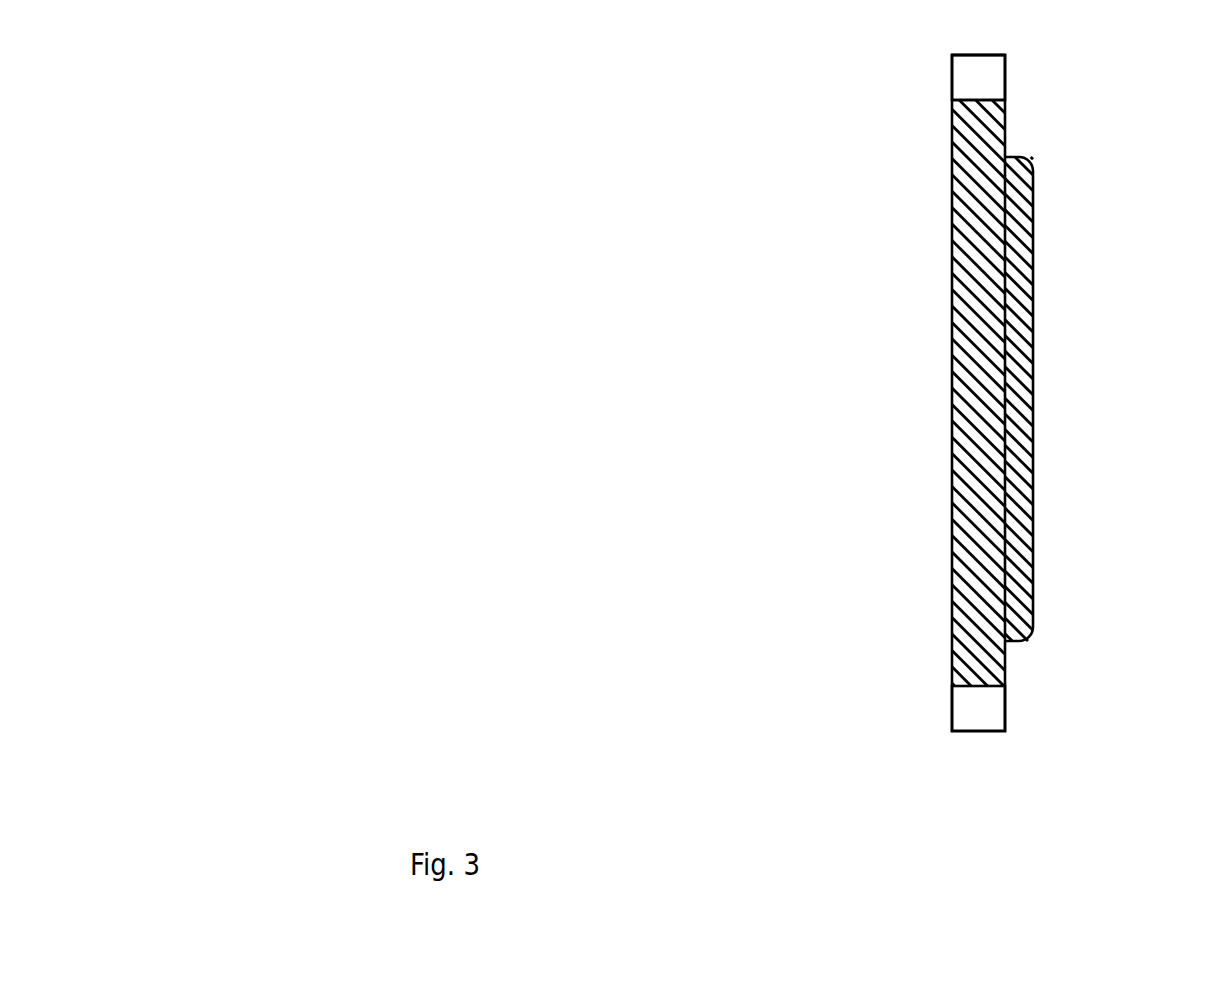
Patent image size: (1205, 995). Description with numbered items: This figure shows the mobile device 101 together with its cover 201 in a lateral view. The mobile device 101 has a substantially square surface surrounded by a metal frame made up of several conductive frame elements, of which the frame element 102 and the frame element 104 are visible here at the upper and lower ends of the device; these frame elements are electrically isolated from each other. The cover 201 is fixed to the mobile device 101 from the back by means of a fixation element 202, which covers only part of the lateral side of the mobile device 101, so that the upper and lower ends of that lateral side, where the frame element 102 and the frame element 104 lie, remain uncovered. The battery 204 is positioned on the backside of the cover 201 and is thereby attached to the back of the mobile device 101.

The mobile device 101 is at (967, 62).
The frame element 102 is at (985, 87).
The frame element 104 is at (988, 720).
The cover 201 is at (1081, 399).
The fixation element 202 is at (952, 453).
The battery 204 is at (1026, 340).